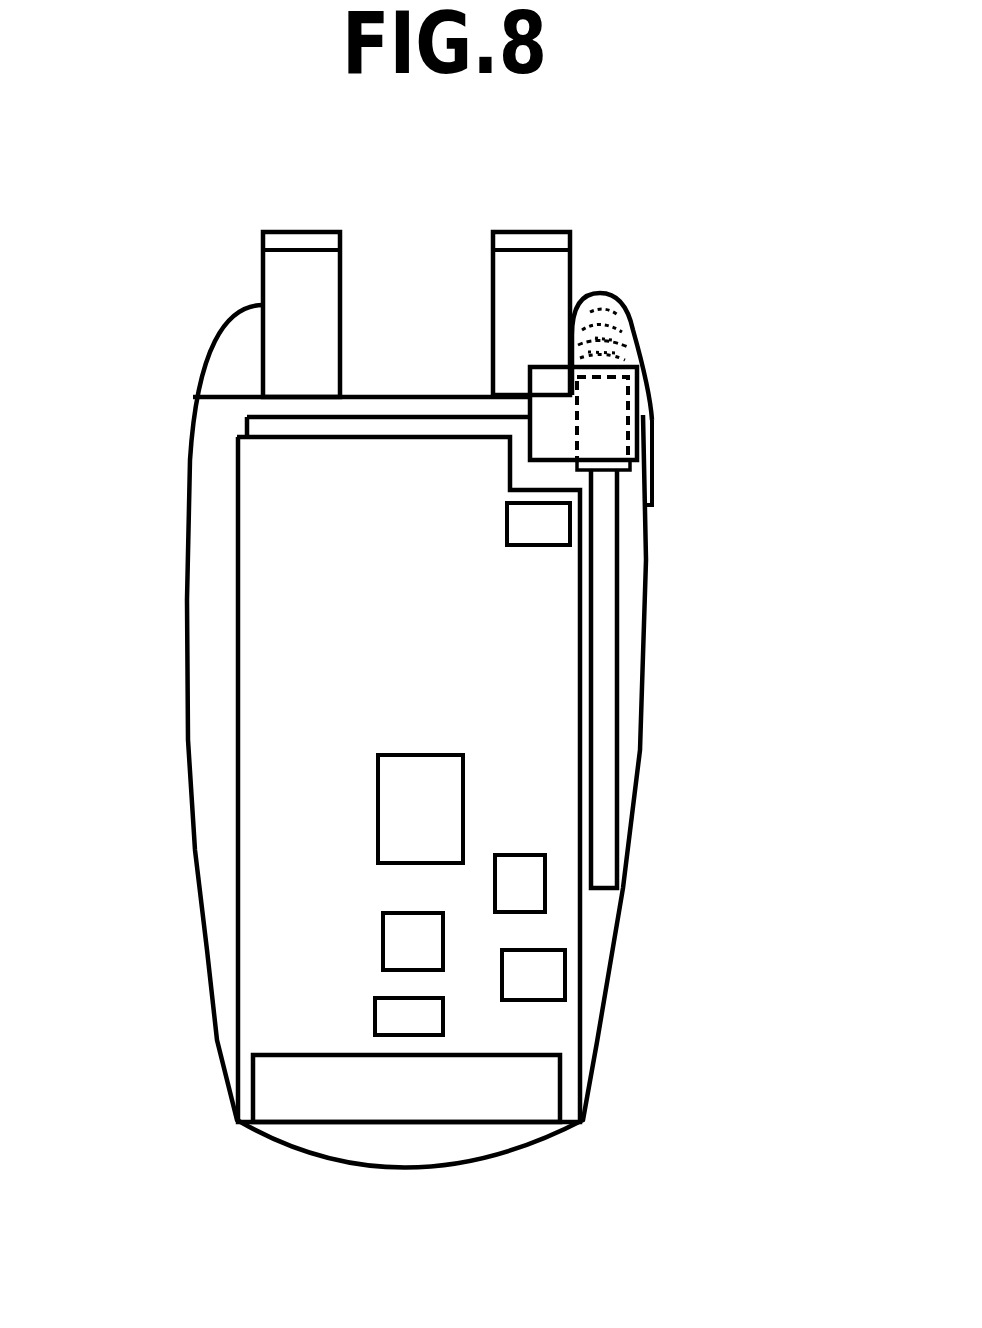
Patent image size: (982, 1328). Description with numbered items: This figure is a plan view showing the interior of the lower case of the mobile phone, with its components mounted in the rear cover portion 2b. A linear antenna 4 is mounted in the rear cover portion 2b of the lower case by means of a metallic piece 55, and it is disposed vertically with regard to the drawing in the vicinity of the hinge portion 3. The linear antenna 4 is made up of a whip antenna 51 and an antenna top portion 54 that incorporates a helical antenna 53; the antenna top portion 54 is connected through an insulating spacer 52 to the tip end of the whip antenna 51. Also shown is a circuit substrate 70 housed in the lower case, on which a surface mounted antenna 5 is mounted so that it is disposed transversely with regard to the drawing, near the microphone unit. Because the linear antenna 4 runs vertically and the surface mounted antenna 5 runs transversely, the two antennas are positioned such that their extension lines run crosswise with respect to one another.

The rear cover portion 2b is at (187, 782).
The hinge portion 3 is at (547, 290).
The linear antenna 4 is at (679, 393).
The surface mounted antenna 5 is at (382, 1107).
The whip antenna 51 is at (606, 745).
The insulating spacer 52 is at (657, 468).
The helical antenna 53 is at (630, 300).
The antenna top portion 54 is at (625, 323).
The metallic piece 55 is at (655, 427).
The circuit substrate 70 is at (253, 973).